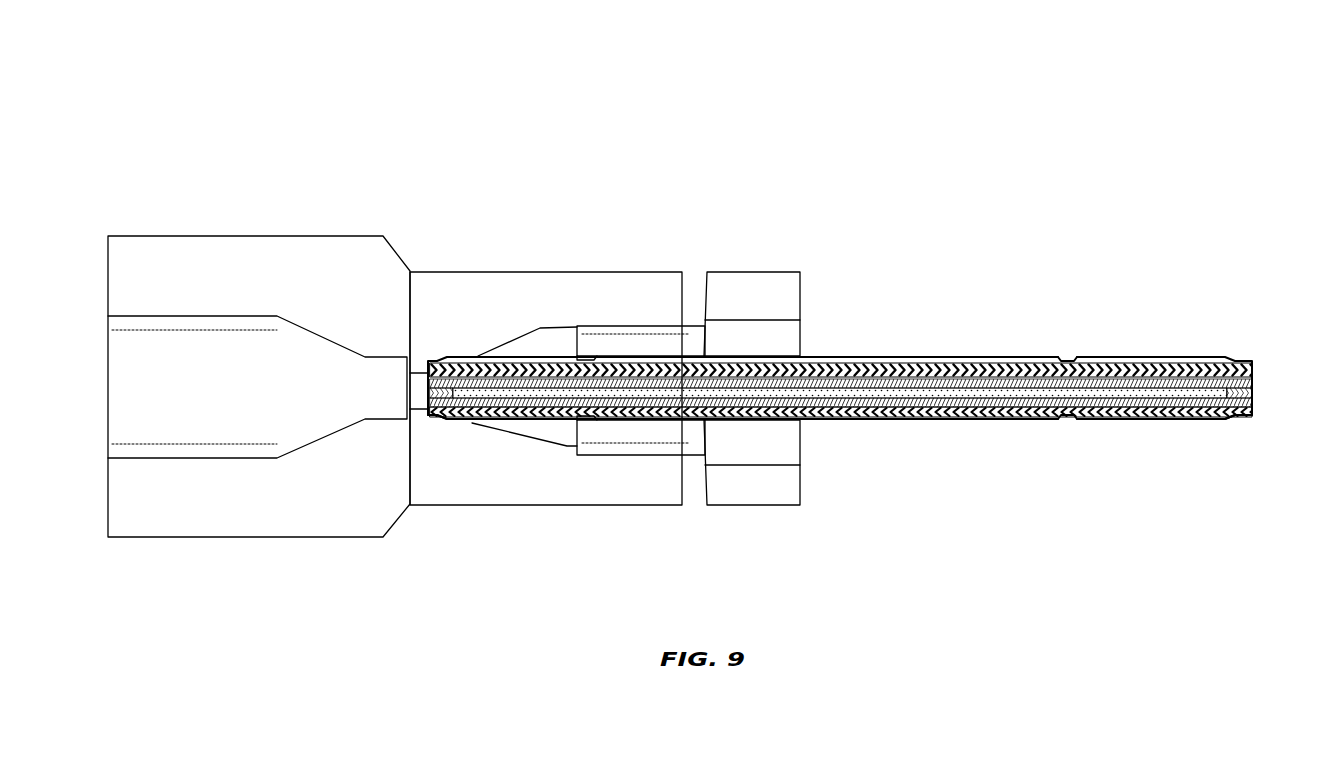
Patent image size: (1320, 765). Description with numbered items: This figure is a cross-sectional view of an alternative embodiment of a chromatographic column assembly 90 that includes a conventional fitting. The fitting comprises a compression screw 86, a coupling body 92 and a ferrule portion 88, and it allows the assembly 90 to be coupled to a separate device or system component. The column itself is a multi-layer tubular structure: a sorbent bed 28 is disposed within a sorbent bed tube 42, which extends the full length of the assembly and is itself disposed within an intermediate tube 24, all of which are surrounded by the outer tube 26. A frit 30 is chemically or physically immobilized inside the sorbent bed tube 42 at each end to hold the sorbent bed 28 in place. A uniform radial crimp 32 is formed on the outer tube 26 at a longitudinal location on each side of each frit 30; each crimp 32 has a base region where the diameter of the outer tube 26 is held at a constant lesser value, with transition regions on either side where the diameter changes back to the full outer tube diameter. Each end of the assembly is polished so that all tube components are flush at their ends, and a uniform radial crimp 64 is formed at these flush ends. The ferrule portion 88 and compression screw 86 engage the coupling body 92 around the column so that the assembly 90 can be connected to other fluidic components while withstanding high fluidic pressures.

The chromatographic column assembly 90 is at (962, 158).
The coupling body 92 is at (381, 236).
The ferrule portion 88 is at (533, 338).
The compression screw 86 is at (752, 272).
The uniform radial crimp 32 is at (586, 346).
The frit 30 is at (430, 390).
The uniform radial crimp 64 is at (435, 432).
The outer tube 26 is at (817, 355).
The intermediate tube 24 is at (1032, 367).
The sorbent bed tube 42 is at (979, 403).
The sorbent bed 28 is at (822, 392).